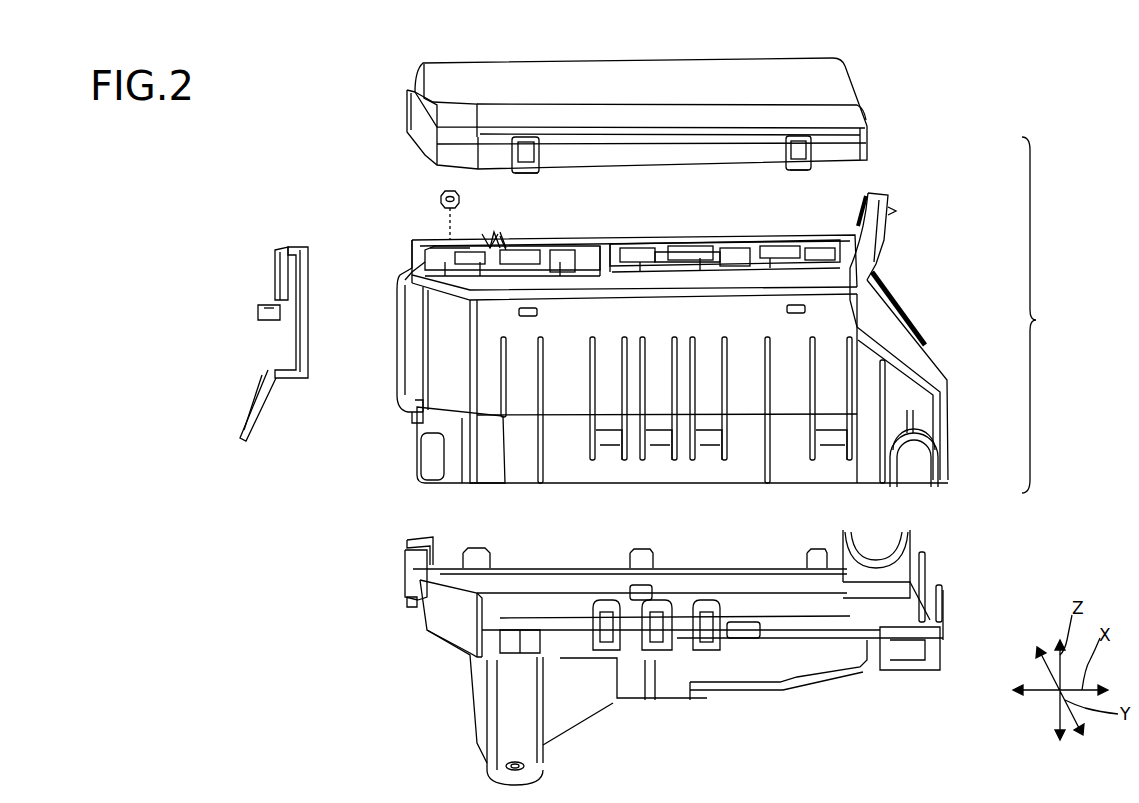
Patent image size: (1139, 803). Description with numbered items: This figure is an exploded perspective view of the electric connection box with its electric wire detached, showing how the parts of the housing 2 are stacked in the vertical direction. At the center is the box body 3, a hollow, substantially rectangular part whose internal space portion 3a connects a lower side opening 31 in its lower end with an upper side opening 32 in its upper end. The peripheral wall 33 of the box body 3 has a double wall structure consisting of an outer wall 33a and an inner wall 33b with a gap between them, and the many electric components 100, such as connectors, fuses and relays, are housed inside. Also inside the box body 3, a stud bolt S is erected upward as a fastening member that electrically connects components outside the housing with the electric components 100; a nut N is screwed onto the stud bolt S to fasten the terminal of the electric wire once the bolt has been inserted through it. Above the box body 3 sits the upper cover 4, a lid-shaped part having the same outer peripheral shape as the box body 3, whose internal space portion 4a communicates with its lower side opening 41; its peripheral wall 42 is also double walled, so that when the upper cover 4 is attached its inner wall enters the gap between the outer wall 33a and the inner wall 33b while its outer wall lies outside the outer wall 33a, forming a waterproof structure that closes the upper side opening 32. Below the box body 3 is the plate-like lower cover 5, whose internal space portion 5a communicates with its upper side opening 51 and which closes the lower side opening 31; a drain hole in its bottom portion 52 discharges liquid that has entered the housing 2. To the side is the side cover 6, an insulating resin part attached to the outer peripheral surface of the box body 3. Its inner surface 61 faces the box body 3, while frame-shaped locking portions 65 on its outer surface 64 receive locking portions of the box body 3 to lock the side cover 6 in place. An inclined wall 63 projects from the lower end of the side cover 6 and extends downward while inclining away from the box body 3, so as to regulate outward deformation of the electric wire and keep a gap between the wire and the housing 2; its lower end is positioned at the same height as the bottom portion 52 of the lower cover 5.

The housing 2 is at (1036, 315).
The box body 3 is at (918, 311).
The internal space portion 3a is at (700, 240).
The upper cover 4 is at (878, 130).
The internal space portion 4a is at (748, 122).
The lower cover 5 is at (918, 540).
The internal space portion 5a is at (735, 602).
The side cover 6 is at (260, 278).
The lower side opening 31 is at (608, 483).
The upper side opening 32 is at (614, 245).
The peripheral wall 33 is at (835, 308).
The outer wall 33a is at (408, 265).
The inner wall 33b is at (415, 272).
The lower side opening 41 is at (597, 165).
The peripheral wall 42 is at (842, 142).
The upper side opening 51 is at (550, 582).
The bottom portion 52 is at (752, 690).
The inner surface 61 is at (273, 397).
The inclined wall 63 is at (257, 410).
The outer surface 64 is at (275, 300).
The locking portions 65 is at (260, 327).
The electric components 100 is at (504, 245).
The nut N is at (428, 193).
The stud bolt S is at (433, 242).